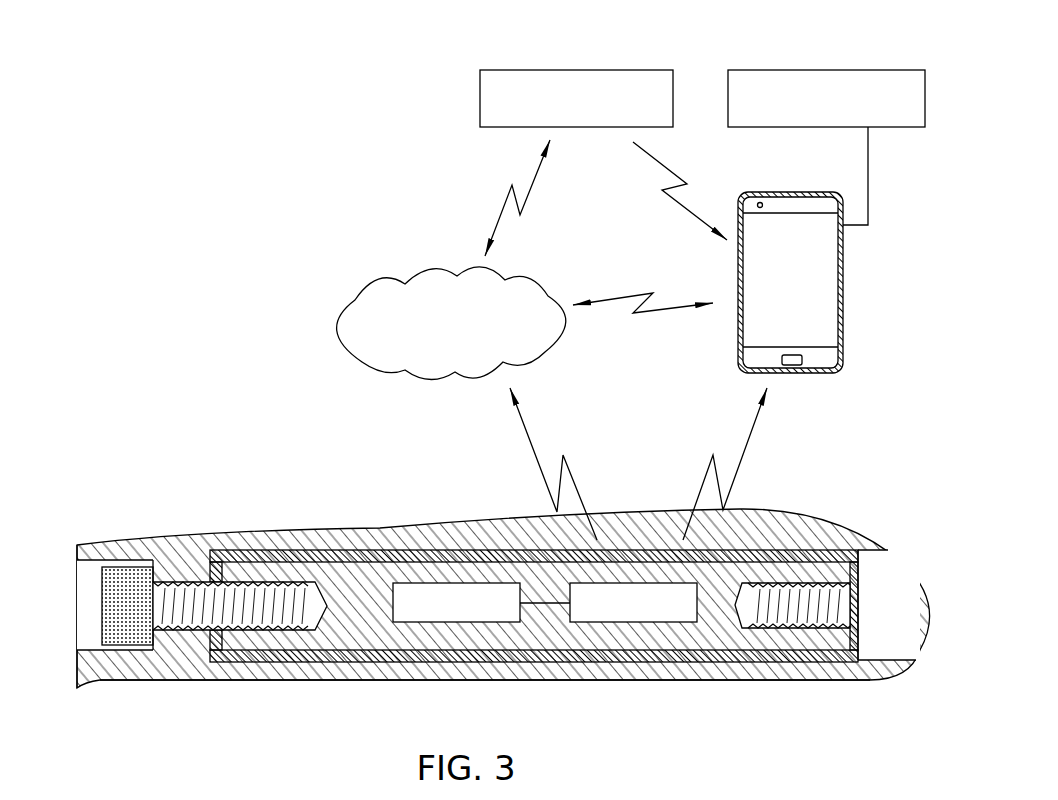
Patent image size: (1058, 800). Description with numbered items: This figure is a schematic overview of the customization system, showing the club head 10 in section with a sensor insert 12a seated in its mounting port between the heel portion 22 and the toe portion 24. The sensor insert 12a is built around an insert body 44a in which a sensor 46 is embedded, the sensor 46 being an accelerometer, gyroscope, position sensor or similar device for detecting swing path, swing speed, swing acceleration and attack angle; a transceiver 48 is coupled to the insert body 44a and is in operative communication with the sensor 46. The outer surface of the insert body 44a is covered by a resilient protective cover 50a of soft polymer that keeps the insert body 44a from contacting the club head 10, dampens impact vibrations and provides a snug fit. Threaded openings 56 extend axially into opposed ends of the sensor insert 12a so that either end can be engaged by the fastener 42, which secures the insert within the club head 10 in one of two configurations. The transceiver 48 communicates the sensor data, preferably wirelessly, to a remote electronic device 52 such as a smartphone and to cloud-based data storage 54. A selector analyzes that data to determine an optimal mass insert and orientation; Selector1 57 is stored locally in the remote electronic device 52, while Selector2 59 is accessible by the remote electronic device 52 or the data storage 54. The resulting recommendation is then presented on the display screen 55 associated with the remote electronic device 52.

The club head 10 is at (830, 520).
The sensor insert 12a is at (650, 642).
The heel portion 22 is at (75, 557).
The toe portion 24 is at (903, 570).
The fastener 42 is at (120, 652).
The insert body 44a is at (725, 642).
The sensor 46 is at (437, 583).
The transceiver 48 is at (645, 583).
The protective cover 50a is at (347, 655).
The remote electronic device 52 is at (848, 262).
The cloud-based data storage 54 is at (428, 262).
The display screen 55 is at (773, 285).
The threaded openings 56 is at (317, 617).
The Selector1 57 is at (826, 70).
The Selector2 59 is at (580, 70).